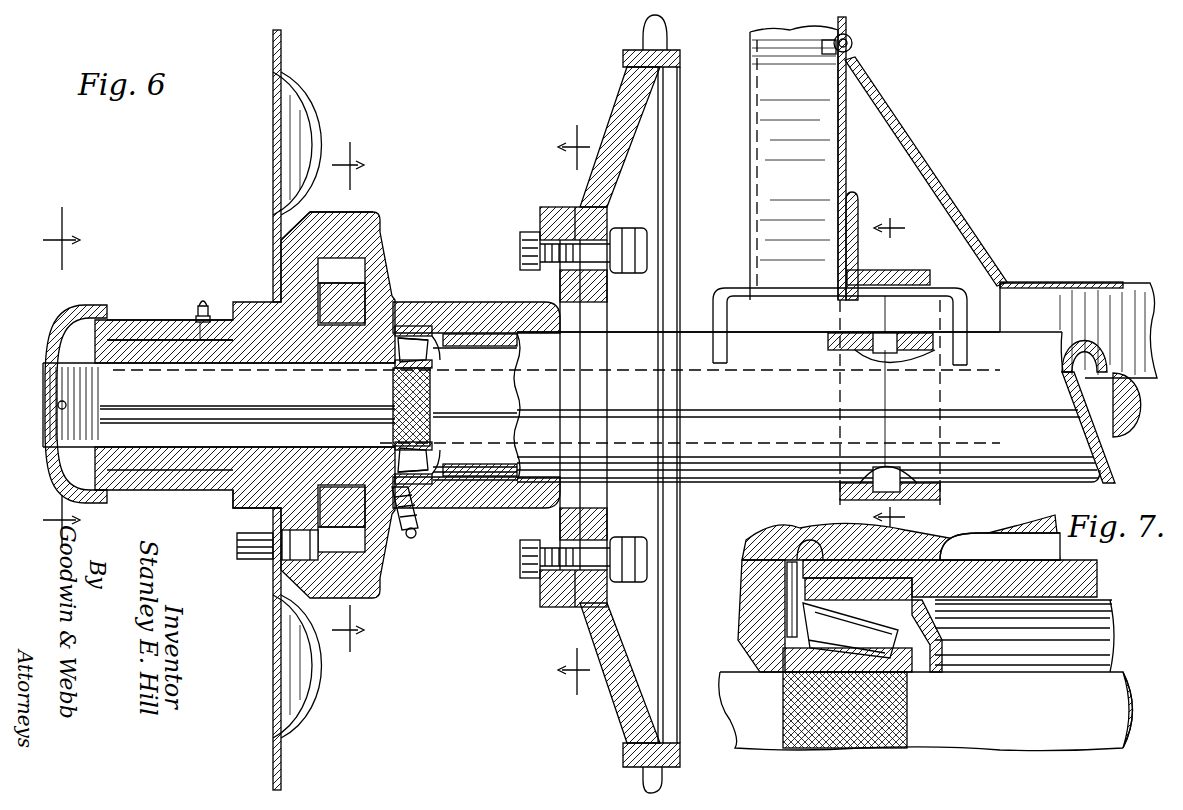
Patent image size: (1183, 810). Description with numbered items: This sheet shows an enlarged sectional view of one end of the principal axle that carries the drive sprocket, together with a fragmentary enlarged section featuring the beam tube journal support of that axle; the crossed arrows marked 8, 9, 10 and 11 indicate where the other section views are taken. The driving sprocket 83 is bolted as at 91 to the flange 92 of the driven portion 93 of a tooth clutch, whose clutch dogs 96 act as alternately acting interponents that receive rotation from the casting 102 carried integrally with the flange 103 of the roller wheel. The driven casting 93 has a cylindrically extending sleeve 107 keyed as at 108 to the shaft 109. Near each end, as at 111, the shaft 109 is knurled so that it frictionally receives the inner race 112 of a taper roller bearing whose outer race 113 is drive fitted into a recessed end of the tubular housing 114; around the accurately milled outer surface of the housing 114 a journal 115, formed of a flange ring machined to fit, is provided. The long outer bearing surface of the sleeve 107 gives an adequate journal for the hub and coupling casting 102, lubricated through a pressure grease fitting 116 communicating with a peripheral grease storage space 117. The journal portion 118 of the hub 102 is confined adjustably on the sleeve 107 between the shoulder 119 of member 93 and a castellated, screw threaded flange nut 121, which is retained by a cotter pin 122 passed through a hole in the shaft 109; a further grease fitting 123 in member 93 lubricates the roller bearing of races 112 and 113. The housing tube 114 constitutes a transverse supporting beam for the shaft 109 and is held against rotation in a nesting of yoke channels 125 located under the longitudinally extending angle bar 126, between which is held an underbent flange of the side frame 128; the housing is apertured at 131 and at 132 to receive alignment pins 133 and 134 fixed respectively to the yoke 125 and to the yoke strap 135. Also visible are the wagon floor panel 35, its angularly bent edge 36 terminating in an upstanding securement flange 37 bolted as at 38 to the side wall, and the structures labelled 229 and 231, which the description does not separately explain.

In FIG. 6, the section line 8- 8 is at (348, 395).
In FIG. 6, the section line 9- 9 is at (70, 377).
In FIG. 6, the section line 10- 10 is at (574, 426).
In FIG. 6, the section line 11- 11 is at (902, 372).
In FIG. 6, the floor panel 35 is at (1061, 268).
In FIG. 6, the angular bend 36 is at (960, 212).
In FIG. 6, the securement flange 37 is at (852, 38).
In FIG. 6, the bolt 38 is at (822, 52).
In FIG. 6, the driving sprocket 83 is at (633, 107).
In FIG. 6, the bolt 91 is at (520, 262).
In FIG. 6, the flange 92 is at (545, 207).
In FIG. 6, the driven portion 93 is at (436, 322).
In FIG. 7, the driven portion 93 is at (752, 645).
In FIG. 6, the clutch dog 96 is at (340, 326).
In FIG. 6, the casting 102 is at (352, 212).
In FIG. 6, the flange 103 is at (270, 213).
In FIG. 6, the sleeve 107 is at (140, 320).
In FIG. 6, the key 108 is at (240, 360).
In FIG. 6, the shaft 109 is at (195, 425).
In FIG. 7, the shaft 109 is at (1098, 720).
In FIG. 6, the knurled portion 111 is at (440, 390).
In FIG. 7, the knurled portion 111 is at (900, 712).
In FIG. 6, the inner race 112 is at (395, 378).
In FIG. 7, the inner race 112 is at (757, 736).
In FIG. 6, the outer race 113 is at (409, 335).
In FIG. 7, the outer race 113 is at (847, 587).
In FIG. 6, the tubular housing 114 is at (690, 340).
In FIG. 7, the tubular housing 114 is at (1098, 577).
In FIG. 6, the journal 115 is at (445, 328).
In FIG. 7, the journal 115 is at (932, 553).
In FIG. 6, the pressure grease fitting 116 is at (197, 305).
In FIG. 6, the grease storage space 117 is at (195, 316).
In FIG. 6, the journal portion 118 is at (120, 490).
In FIG. 6, the shoulder 119 is at (330, 322).
In FIG. 6, the flange nut 121 is at (65, 318).
In FIG. 6, the cotter pin 122 is at (58, 405).
In FIG. 6, the grease fitting 123 is at (416, 538).
In FIG. 6, the yoke channel 125 is at (800, 302).
In FIG. 6, the angle bar 126 is at (860, 205).
In FIG. 6, the side frame 128 is at (846, 133).
In FIG. 6, the aperture 131 is at (860, 352).
In FIG. 6, the aperture 132 is at (905, 478).
In FIG. 6, the alignment pin 133 is at (955, 283).
In FIG. 6, the alignment pin 134 is at (885, 465).
In FIG. 6, the yoke strap 135 is at (940, 490).
In FIG. 6, the spring hanger housing 229 is at (760, 163).
In FIG. 6, the frame member 231 is at (1078, 330).